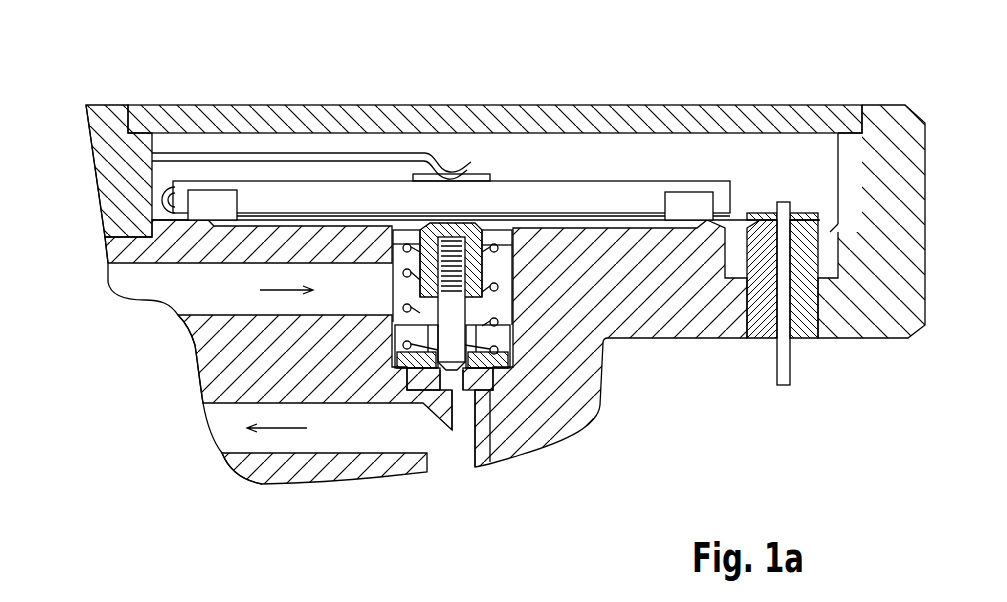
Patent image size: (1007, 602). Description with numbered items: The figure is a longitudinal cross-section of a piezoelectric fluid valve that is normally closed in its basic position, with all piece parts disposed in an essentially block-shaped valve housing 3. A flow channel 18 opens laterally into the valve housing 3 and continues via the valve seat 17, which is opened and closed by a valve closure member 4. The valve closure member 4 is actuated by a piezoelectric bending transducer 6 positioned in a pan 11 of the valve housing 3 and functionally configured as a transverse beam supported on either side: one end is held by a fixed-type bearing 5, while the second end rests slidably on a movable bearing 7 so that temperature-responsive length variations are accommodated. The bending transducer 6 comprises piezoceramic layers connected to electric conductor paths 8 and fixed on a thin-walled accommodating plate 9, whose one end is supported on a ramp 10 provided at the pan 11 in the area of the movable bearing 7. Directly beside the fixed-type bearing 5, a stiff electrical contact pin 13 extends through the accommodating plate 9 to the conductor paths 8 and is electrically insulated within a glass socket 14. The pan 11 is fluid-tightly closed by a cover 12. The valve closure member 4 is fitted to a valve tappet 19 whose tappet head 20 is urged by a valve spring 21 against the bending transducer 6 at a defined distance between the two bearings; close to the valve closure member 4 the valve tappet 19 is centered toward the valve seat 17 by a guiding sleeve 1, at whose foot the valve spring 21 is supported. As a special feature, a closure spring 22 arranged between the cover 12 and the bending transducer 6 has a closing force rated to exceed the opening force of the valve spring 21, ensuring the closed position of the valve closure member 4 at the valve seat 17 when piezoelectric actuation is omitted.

The guiding sleeve 1 is at (468, 337).
The valve housing 3 is at (888, 178).
The valve closure member 4 is at (453, 372).
The fixed-type bearing 5 is at (702, 222).
The piezoelectric bending transducer 6 is at (645, 193).
The movable bearing 7 is at (125, 235).
The electric conductor paths 8 is at (745, 212).
The accommodating plate 9 is at (811, 212).
The ramp 10 is at (205, 217).
The pan 11 is at (820, 160).
The cover 12 is at (490, 106).
The electrical contact pin 13 is at (785, 368).
The glass socket 14 is at (758, 312).
The valve seat 17 is at (481, 378).
The flow channel 18 is at (218, 417).
The valve tappet 19 is at (440, 300).
The tappet head 20 is at (495, 235).
The valve spring 21 is at (447, 302).
The closure spring 22 is at (380, 156).